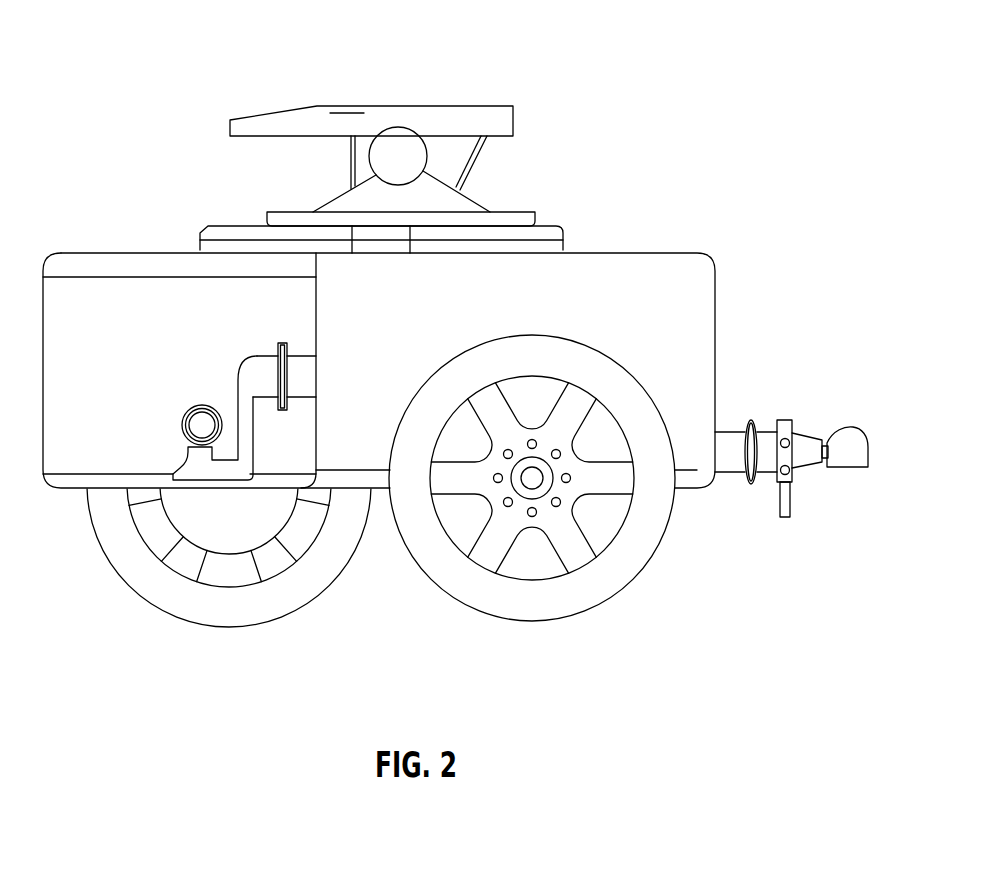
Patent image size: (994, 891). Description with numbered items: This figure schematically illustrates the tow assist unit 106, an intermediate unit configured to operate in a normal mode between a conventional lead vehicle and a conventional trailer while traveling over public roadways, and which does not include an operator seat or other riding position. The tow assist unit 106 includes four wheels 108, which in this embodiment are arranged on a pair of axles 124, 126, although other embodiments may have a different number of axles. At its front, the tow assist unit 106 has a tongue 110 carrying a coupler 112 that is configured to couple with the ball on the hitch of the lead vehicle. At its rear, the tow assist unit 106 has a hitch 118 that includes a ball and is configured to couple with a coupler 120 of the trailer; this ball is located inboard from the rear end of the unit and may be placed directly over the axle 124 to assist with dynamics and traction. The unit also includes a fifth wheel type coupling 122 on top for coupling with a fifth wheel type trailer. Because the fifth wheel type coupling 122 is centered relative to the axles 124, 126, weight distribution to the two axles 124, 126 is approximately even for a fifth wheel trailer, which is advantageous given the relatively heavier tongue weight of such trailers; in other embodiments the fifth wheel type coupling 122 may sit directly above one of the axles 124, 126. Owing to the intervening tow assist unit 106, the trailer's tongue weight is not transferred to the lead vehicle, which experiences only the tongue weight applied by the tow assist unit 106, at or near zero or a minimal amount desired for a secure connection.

The tow assist unit 106 is at (580, 138).
The wheels 108 is at (376, 518).
The tongue 110 is at (763, 432).
The coupler 112 is at (857, 427).
The hitch 118 is at (257, 363).
The coupler 120 is at (195, 410).
The fifth wheel type coupling 122 is at (343, 106).
The axle 124 is at (233, 500).
The axle 126 is at (533, 478).